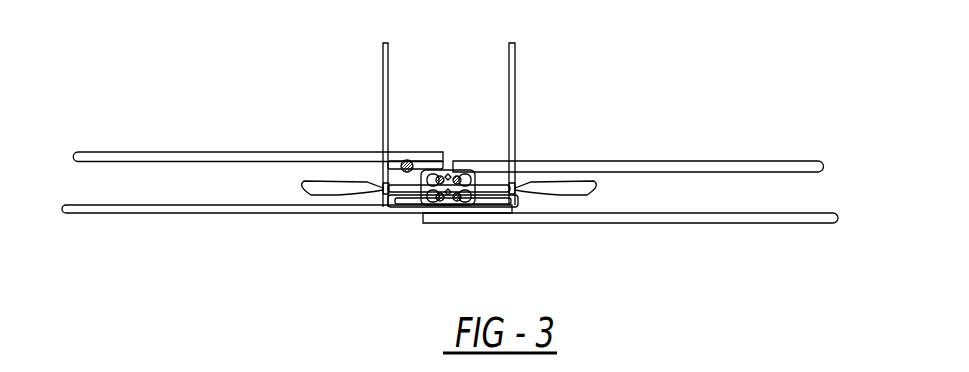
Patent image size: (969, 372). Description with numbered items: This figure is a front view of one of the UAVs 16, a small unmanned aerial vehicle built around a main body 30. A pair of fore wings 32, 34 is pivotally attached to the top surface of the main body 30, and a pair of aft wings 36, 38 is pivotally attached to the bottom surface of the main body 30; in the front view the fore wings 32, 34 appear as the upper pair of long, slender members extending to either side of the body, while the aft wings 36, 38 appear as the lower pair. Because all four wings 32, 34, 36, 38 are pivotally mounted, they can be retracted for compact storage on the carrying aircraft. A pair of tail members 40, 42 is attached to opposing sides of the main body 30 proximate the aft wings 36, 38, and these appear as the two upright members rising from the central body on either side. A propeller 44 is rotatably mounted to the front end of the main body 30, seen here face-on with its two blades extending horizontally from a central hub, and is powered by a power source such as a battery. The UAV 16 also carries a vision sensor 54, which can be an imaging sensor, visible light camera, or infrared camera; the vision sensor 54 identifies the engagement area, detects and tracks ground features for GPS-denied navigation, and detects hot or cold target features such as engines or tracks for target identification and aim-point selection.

The UAV 16 is at (450, 163).
The main body 30 is at (449, 181).
The fore wing 32 is at (183, 153).
The fore wing 34 is at (658, 162).
The aft wing 36 is at (165, 214).
The aft wing 38 is at (648, 223).
The tail member 40 is at (383, 85).
The tail member 42 is at (516, 100).
The propeller 44 is at (411, 188).
The vision sensor 54 is at (411, 162).